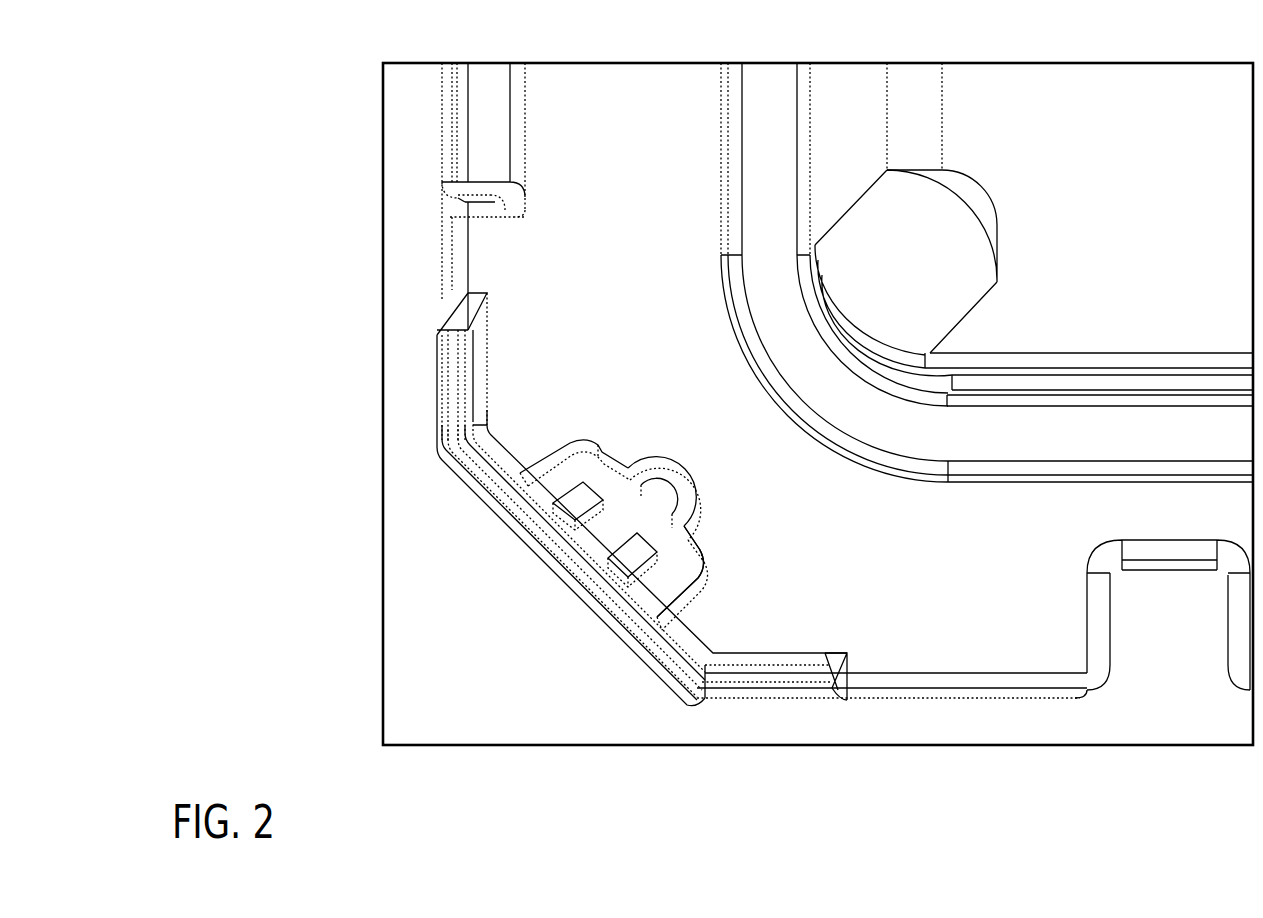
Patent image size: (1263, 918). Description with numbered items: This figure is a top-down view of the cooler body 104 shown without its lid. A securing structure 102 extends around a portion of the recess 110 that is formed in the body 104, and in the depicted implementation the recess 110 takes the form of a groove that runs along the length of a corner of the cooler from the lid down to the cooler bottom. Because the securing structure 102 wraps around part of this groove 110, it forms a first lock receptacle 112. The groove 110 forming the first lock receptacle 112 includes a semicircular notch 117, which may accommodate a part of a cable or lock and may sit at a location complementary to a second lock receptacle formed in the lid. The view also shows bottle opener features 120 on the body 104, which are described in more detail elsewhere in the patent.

The body 104 is at (310, 73).
The securing structure 102 is at (548, 565).
The first lock receptacle 112 is at (634, 497).
The semicircular notch 117 is at (656, 492).
The recess 110 is at (684, 552).
The bottle opener features 120 is at (638, 553).